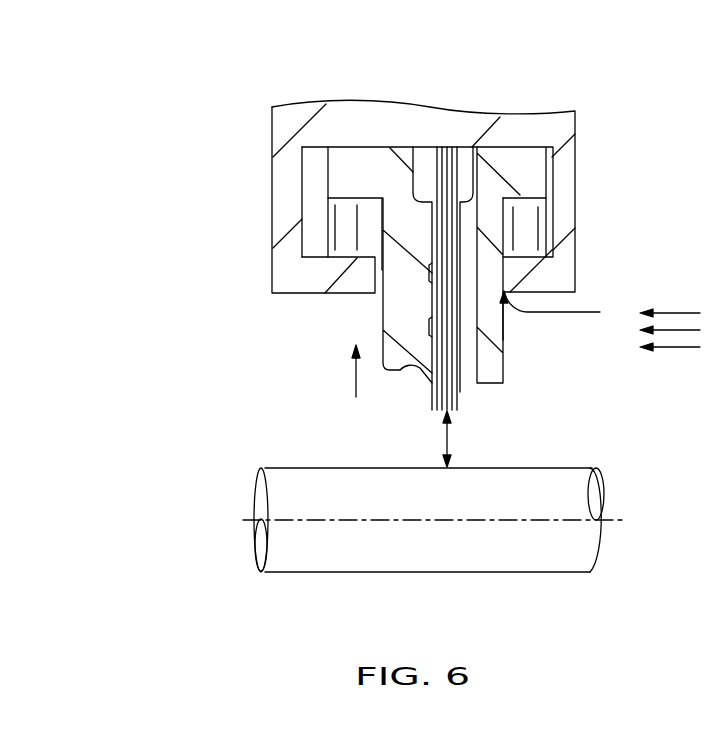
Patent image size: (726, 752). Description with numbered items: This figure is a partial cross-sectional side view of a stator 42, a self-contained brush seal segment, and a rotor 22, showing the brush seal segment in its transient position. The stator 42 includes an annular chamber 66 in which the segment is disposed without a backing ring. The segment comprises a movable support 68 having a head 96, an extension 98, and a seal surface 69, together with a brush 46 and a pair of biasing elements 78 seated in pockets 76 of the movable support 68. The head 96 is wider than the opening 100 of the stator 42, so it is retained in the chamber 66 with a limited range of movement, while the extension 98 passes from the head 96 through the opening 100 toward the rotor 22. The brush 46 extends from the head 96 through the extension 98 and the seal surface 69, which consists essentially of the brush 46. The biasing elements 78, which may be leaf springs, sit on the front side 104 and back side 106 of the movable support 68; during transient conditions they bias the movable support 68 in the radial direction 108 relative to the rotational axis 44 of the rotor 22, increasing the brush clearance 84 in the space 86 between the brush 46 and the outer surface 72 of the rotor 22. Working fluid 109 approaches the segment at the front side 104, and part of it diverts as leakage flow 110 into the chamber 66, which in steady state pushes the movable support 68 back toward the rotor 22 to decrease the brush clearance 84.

The rotor 22 is at (256, 497).
The stator 42 is at (272, 121).
The rotational axis 44 is at (425, 518).
The brush 46 is at (460, 390).
The chamber 66 is at (310, 170).
The movable support 68 is at (512, 368).
The seal surface 69 is at (407, 368).
The outer surface 72 is at (590, 468).
The pockets 76 is at (365, 198).
The biasing elements 78 is at (340, 245).
The brush clearance 84 is at (450, 440).
The space 86 is at (412, 440).
The head 96 is at (376, 147).
The extension 98 is at (380, 316).
The opening 100 is at (376, 277).
The front side 104 is at (503, 320).
The back side 106 is at (380, 343).
The radial direction 108 is at (347, 388).
The working fluid 109 is at (677, 347).
The leakage flow 110 is at (583, 311).